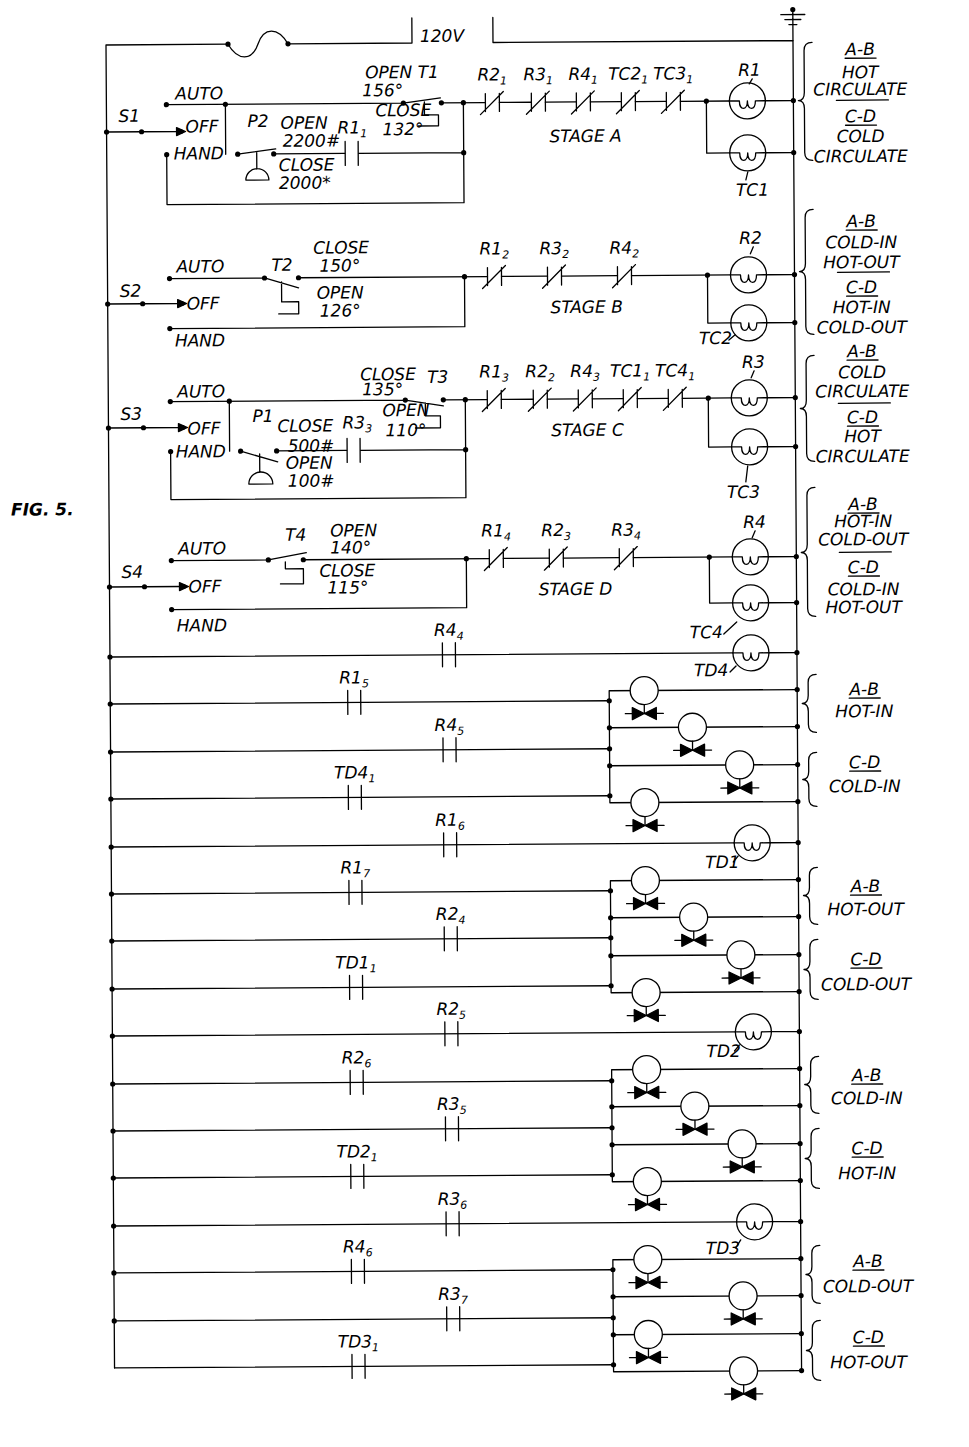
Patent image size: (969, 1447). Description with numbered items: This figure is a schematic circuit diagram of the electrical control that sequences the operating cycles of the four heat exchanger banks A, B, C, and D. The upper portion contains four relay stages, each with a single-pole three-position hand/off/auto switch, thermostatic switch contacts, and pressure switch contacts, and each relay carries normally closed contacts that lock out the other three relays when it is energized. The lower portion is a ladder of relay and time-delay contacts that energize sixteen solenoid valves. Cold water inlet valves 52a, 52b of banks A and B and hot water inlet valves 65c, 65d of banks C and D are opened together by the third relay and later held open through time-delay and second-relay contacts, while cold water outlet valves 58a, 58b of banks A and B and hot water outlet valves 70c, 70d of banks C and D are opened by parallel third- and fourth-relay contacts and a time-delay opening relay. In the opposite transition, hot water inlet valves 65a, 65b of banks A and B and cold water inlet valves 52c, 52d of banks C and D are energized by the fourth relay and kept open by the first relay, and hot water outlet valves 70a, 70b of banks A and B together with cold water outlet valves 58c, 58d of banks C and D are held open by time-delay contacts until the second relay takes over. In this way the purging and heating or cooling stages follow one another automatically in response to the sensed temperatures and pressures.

The cold water inlet valve 52a is at (633, 1056).
The cold water inlet valve 52b is at (698, 1100).
The cold water inlet valve 52c is at (745, 759).
The cold water inlet valve 52d is at (650, 796).
The cold water outlet valve 58a is at (633, 1250).
The cold water outlet valve 58b is at (745, 1290).
The cold water outlet valve 58c is at (745, 949).
The cold water outlet valve 58d is at (650, 986).
The hot water inlet valve 65a is at (633, 678).
The hot water inlet valve 65b is at (698, 721).
The hot water inlet valve 65c is at (745, 1138).
The hot water inlet valve 65d is at (650, 1175).
The hot water outlet valve 70a is at (632, 874).
The hot water outlet valve 70b is at (698, 911).
The hot water outlet valve 70c is at (650, 1328).
The hot water outlet valve 70d is at (745, 1365).